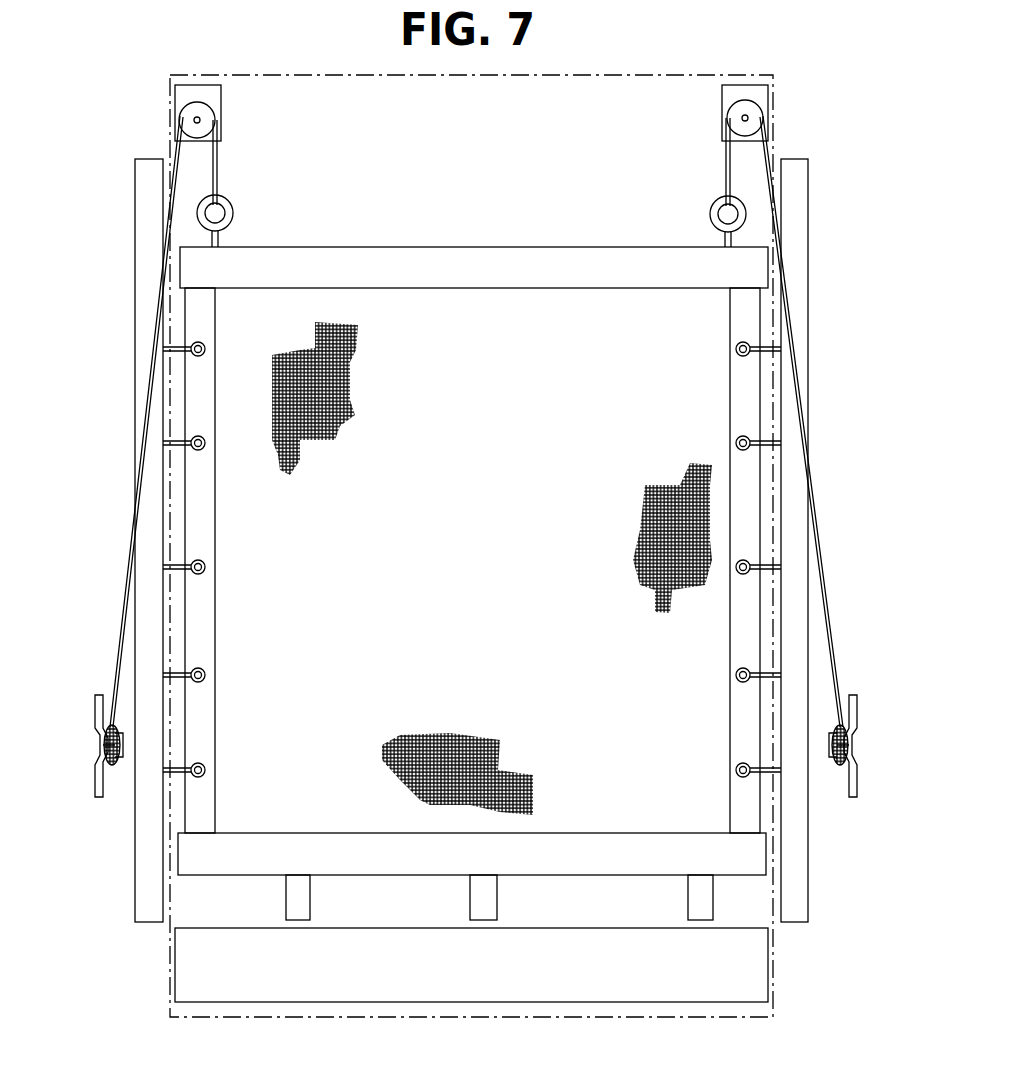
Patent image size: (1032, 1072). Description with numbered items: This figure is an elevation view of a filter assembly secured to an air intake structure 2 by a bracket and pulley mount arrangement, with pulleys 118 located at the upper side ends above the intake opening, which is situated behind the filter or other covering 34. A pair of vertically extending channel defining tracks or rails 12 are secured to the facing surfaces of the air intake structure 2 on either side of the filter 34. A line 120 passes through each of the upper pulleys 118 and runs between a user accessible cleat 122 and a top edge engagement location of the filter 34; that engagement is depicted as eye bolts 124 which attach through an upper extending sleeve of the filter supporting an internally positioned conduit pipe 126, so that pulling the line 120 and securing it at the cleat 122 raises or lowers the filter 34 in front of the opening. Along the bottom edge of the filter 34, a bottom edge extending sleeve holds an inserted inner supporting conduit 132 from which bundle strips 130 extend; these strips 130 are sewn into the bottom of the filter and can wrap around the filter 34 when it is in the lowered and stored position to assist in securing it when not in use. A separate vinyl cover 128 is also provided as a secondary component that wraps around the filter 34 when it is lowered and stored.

The air intake structure 2 is at (486, 128).
The vertically extending channel defining track or rail 12 is at (135, 210).
The filter or covering 34 is at (467, 558).
The bracket and pulley mount arrangement 118 is at (186, 112).
The line 120 is at (123, 591).
The user accessible cleat 122 is at (94, 774).
The eye bolt 124 is at (231, 207).
The conduit pipe 126 is at (403, 247).
The vinyl cover 128 is at (195, 966).
The bundle strips 130 is at (688, 906).
The inner supporting conduit 132 is at (195, 861).